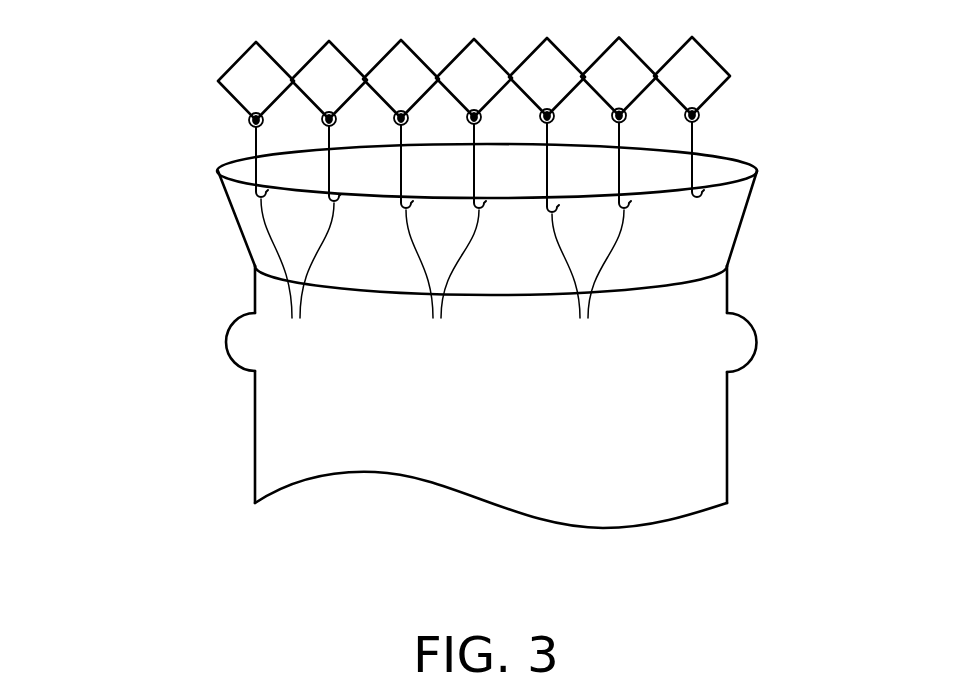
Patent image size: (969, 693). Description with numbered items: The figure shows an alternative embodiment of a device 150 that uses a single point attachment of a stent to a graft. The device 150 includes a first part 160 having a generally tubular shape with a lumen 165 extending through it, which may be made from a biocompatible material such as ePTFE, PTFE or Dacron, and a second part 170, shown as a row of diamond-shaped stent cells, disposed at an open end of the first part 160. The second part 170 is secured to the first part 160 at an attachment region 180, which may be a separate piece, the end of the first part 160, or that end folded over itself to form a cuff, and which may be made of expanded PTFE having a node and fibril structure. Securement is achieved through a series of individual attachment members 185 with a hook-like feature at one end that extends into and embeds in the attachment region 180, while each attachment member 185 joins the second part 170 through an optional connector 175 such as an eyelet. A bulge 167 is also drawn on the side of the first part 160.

The device 150 is at (108, 168).
The first part 160 is at (698, 423).
The lumen 165 is at (487, 533).
The bulge / protrusion 167 is at (745, 343).
The second part 170 is at (757, 77).
The connector 175 is at (248, 126).
The attachment region 180 is at (262, 243).
The attachment members 185 is at (805, 200).